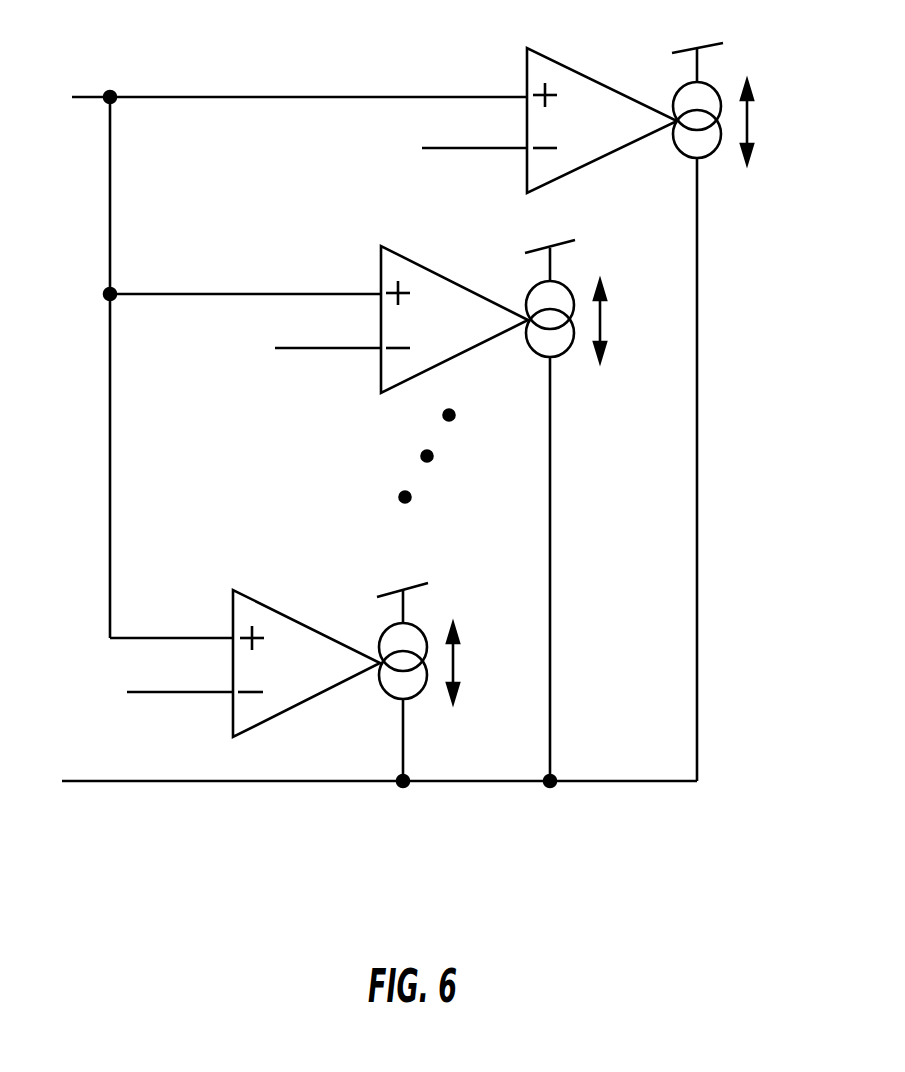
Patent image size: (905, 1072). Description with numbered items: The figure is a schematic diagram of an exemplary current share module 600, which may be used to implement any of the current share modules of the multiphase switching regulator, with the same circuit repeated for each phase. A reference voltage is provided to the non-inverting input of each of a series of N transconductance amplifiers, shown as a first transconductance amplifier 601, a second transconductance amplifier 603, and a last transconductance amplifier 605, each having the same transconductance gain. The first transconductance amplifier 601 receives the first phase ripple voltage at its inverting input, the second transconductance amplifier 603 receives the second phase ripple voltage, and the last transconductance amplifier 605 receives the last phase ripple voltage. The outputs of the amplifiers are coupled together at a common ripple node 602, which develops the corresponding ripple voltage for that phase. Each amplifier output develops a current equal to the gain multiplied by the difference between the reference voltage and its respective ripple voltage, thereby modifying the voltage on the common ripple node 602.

The current share module 600 is at (393, 456).
The first transconductance amplifier 601 is at (578, 70).
The common ripple node 602 is at (554, 779).
The second transconductance amplifier 603 is at (430, 270).
The last transconductance amplifier 605 is at (282, 613).